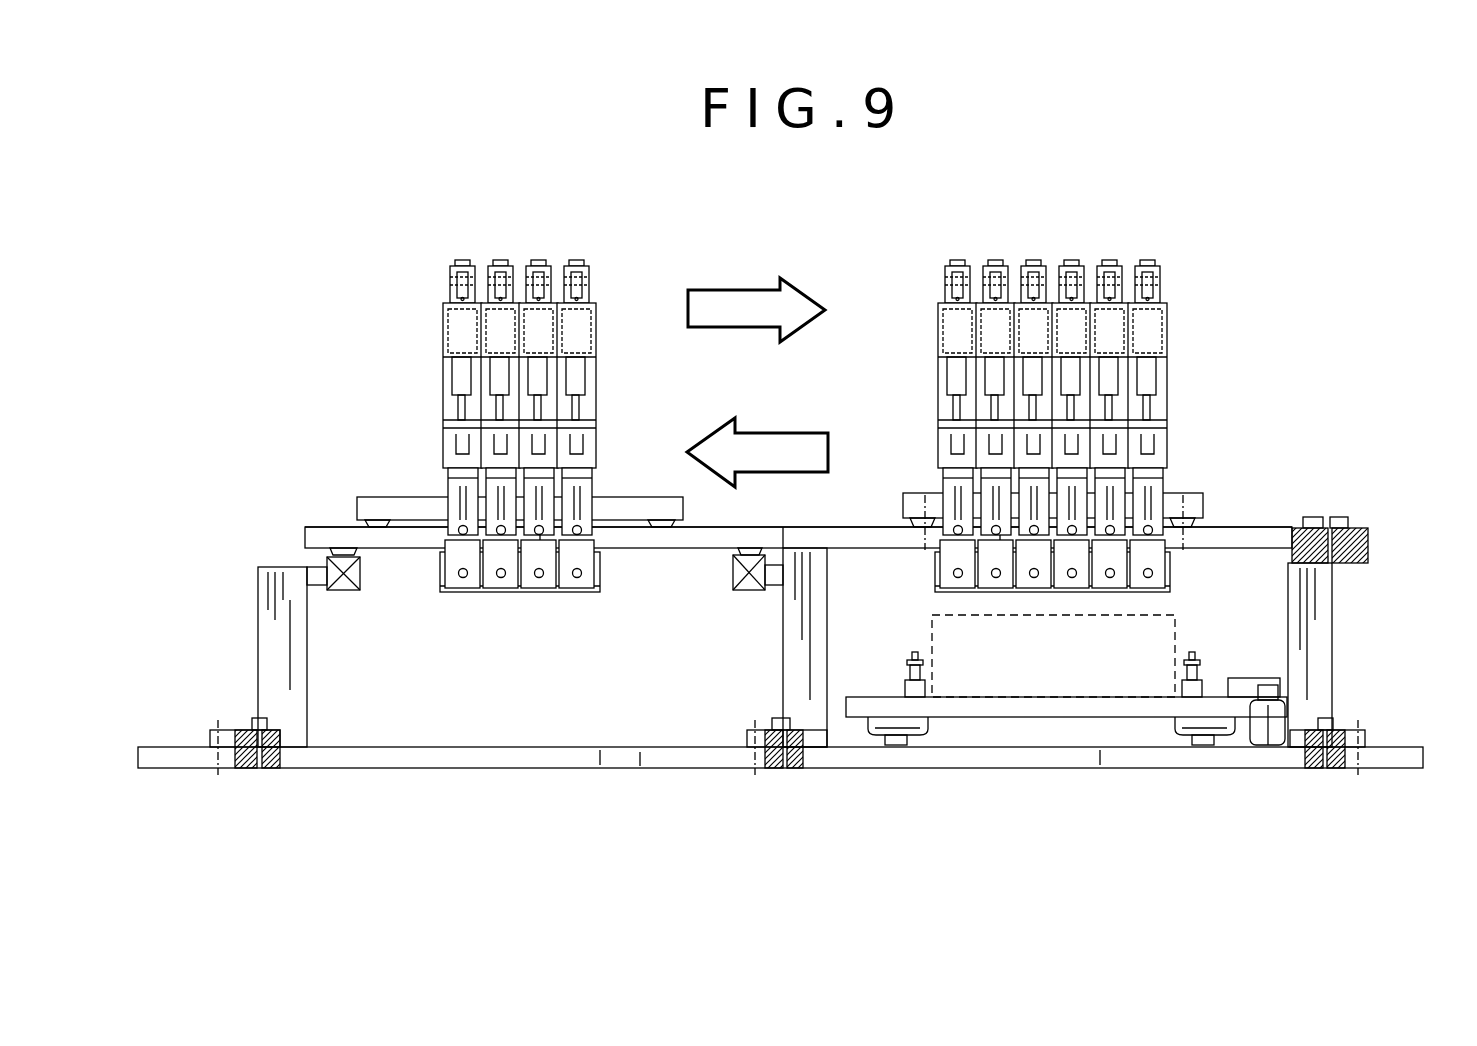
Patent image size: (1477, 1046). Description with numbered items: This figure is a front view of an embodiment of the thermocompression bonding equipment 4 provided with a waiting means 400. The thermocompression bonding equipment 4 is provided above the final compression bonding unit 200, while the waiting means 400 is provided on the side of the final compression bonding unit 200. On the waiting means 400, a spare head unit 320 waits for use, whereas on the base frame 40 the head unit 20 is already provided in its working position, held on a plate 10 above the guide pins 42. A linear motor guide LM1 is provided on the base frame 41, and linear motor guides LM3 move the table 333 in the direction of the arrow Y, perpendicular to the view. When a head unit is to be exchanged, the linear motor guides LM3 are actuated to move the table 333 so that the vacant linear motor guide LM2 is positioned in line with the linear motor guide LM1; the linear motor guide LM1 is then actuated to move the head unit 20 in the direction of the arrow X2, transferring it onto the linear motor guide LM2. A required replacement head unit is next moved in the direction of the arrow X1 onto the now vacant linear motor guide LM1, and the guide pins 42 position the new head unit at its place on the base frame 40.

The thermocompression bonding equipment 4 is at (789, 506).
The head holder plate 10 is at (1193, 495).
The head unit 20 is at (1182, 311).
The head unit 320 is at (605, 272).
The table 333 is at (332, 535).
The base frame 40 is at (1336, 648).
The base frame 41 is at (1368, 541).
The guide pins 42 is at (918, 528).
The final compression bonding unit 200 is at (1020, 674).
The waiting means 400 is at (462, 676).
The linear motor guide LM1 is at (1253, 524).
The linear motor guide LM2 is at (415, 520).
The linear motor guides LM3 is at (325, 561).
The direction of arrow X1 is at (757, 290).
The direction of arrow X2 is at (770, 433).